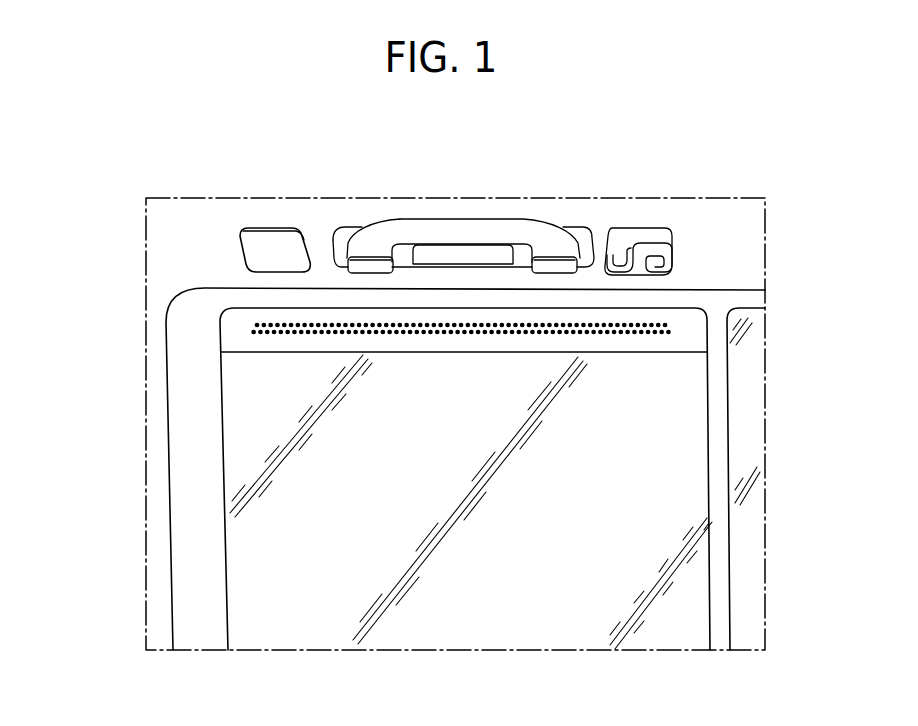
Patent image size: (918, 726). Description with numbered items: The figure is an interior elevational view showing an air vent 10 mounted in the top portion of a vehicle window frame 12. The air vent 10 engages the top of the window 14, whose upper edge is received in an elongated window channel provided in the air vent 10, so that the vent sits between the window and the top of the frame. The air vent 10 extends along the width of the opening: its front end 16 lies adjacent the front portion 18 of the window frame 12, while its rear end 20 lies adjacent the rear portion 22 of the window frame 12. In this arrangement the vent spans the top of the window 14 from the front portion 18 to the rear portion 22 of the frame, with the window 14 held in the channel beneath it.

The air vent 10 is at (461, 401).
The vehicle window frame 12 is at (124, 563).
The window 14 is at (653, 475).
The front end 16 is at (232, 328).
The front portion 18 is at (193, 423).
The rear end 20 is at (690, 333).
The rear portion 22 is at (718, 390).